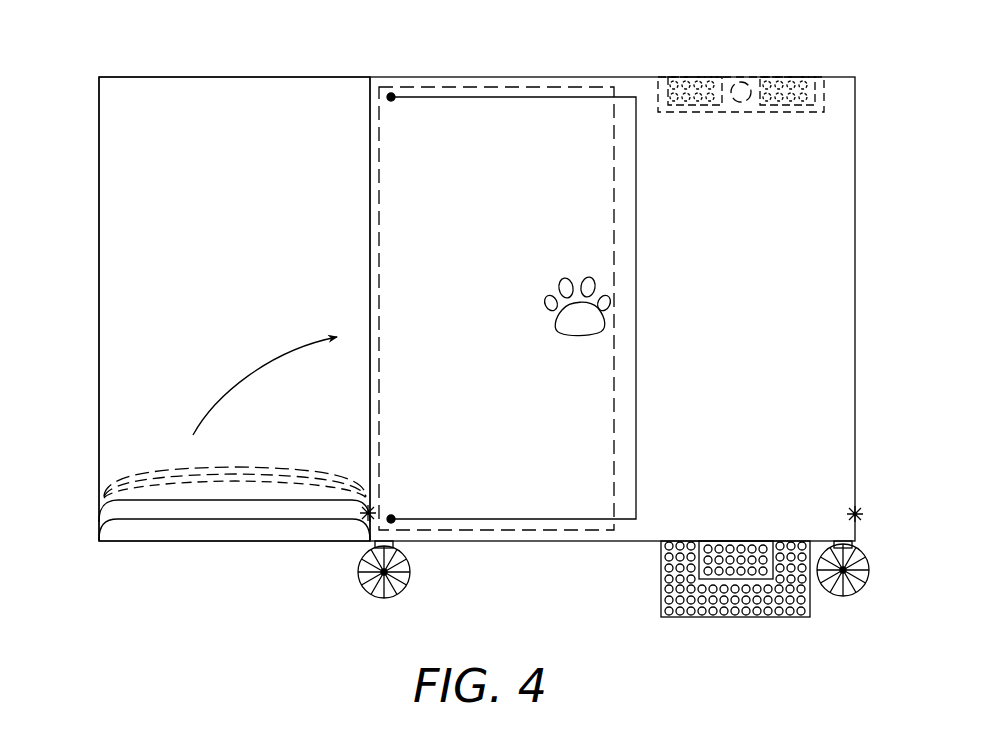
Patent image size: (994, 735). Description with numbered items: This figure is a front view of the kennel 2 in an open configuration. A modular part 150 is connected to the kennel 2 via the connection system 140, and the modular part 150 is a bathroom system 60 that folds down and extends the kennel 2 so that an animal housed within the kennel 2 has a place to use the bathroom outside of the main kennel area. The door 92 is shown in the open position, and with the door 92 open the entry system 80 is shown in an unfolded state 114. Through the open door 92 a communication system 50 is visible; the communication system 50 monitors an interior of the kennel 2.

The kennel 2 is at (812, 54).
The communication system 50 is at (838, 90).
The bathroom system 60 is at (99, 412).
The entry system 80 is at (650, 593).
The door 92 is at (573, 134).
The unfolded state 114 is at (817, 609).
The connection system 140 is at (366, 107).
The modular part 150 is at (98, 64).